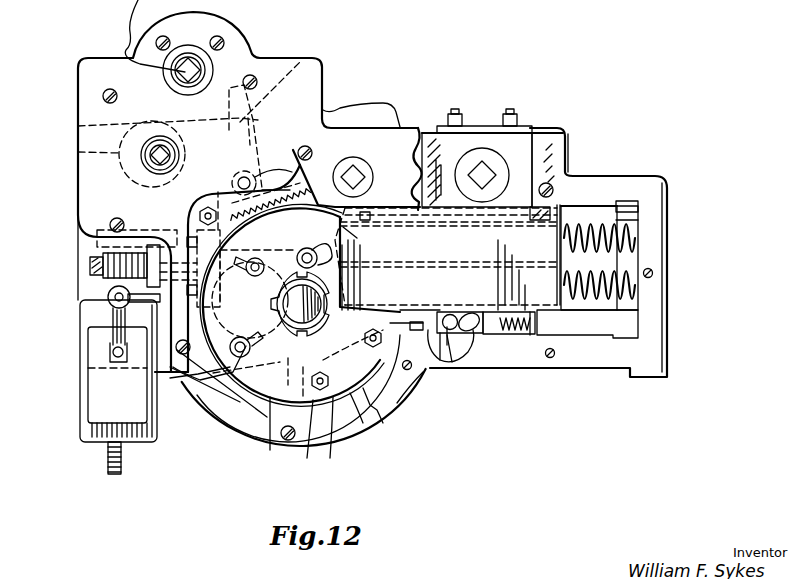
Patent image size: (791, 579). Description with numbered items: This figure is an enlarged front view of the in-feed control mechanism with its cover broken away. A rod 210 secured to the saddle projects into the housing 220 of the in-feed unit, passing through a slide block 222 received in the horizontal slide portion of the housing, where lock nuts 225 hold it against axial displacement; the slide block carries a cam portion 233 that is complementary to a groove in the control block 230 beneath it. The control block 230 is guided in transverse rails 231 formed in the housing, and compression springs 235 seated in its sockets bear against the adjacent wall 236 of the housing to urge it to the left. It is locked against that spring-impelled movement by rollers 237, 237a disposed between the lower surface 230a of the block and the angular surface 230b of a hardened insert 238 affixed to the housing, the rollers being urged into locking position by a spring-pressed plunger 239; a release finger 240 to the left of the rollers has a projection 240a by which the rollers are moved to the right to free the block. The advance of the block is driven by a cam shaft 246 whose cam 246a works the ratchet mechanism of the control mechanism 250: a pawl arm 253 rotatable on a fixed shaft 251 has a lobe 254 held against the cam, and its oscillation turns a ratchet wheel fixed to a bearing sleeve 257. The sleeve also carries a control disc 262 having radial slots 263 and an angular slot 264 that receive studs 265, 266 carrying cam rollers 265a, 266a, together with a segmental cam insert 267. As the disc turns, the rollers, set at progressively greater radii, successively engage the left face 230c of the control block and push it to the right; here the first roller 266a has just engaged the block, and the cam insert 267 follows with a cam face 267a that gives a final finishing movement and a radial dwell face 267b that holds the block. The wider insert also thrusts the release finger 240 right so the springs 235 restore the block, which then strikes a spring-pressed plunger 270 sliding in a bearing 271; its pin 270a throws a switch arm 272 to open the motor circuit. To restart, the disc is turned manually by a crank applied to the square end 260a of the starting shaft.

The rod 210 is at (487, 170).
The housing 220 is at (672, 373).
The slide block 222 is at (545, 130).
The lock nuts 225 is at (528, 170).
The control block 230 is at (447, 257).
The lower surface of the control block 230a is at (487, 332).
The angular surface of the hardened insert 230b is at (417, 398).
The left face of the control block 230c is at (350, 233).
The transverse rails 231 is at (598, 208).
The cam portion 233 is at (555, 207).
The compression springs 235 is at (630, 287).
The wall of the housing 236 is at (632, 303).
The roller 237 is at (460, 357).
The roller 237a is at (445, 357).
The hardened insert 238 is at (452, 357).
The spring-pressed plunger 239 is at (530, 366).
The release finger 240 is at (447, 317).
The projection 240a is at (383, 312).
The cam shaft 246 is at (160, 155).
The cam 246a is at (80, 153).
The control mechanism 250 is at (195, 380).
The fixed shaft 251 is at (298, 320).
The pawl arm 253 is at (300, 52).
The lobe 254 is at (78, 126).
The bearing sleeve 257 is at (290, 352).
The square end 260a is at (364, 172).
The control disc 262 is at (298, 405).
The radial slots 263 is at (244, 335).
The angular slot 264 is at (326, 170).
The stud 265 is at (250, 300).
The cam roller 265a is at (212, 381).
The stud 266 is at (309, 246).
The cam roller 266a is at (263, 254).
The segmental cam insert 267 is at (313, 423).
The cam face 267a is at (307, 443).
The radial dwell face 267b is at (353, 387).
The spring-pressed plunger 270 is at (88, 262).
The pin 270a is at (108, 292).
The bearing 271 is at (80, 243).
The switch arm 272 is at (110, 318).